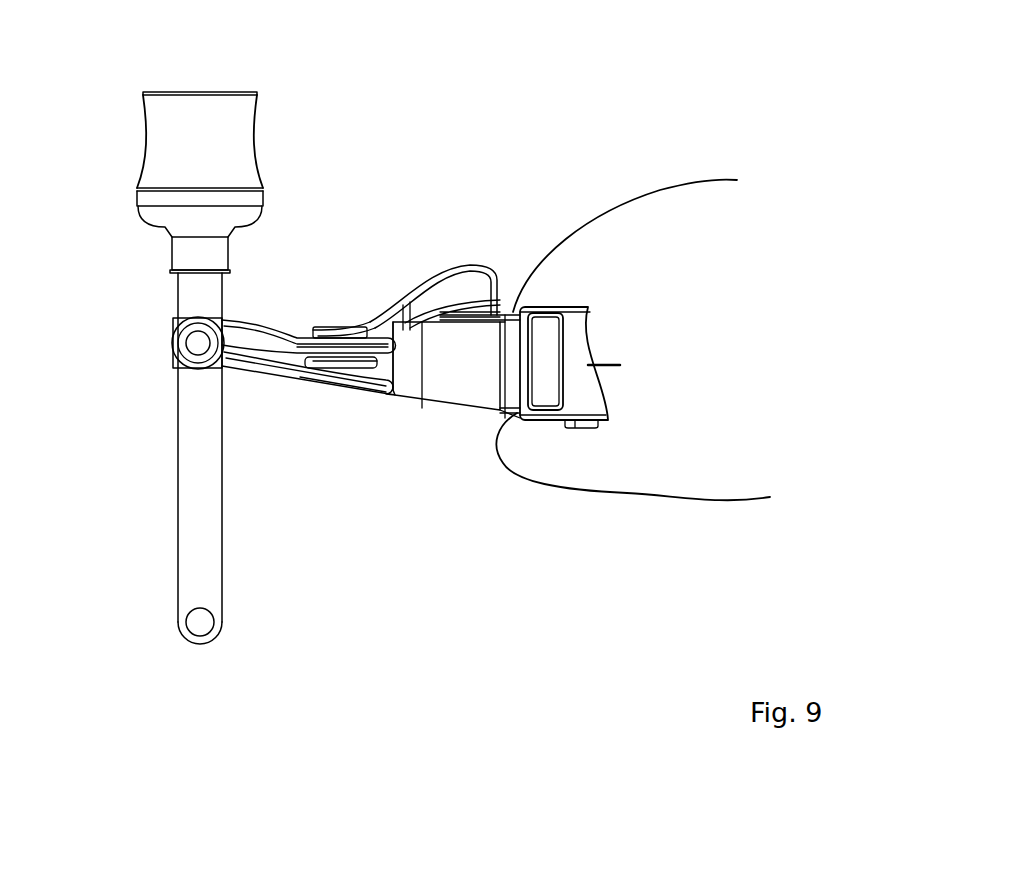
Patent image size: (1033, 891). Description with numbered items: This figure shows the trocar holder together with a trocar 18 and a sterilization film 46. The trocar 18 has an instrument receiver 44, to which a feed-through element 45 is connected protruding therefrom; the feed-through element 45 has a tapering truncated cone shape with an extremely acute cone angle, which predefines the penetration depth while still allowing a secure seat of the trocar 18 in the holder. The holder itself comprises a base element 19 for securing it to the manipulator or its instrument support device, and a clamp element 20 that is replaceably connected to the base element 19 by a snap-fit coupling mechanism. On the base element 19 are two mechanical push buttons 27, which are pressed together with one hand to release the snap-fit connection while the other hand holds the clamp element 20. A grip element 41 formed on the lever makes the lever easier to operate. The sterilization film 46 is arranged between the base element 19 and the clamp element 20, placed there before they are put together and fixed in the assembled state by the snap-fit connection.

The trocar 18 is at (123, 168).
The instrument receiver 44 is at (245, 152).
The feed-through element 45 is at (188, 470).
The clamp element 20 is at (447, 392).
The grip element 41 is at (473, 277).
The base element 19 is at (578, 403).
The mechanical push buttons 27 is at (543, 398).
The sterilization film 46 is at (677, 180).